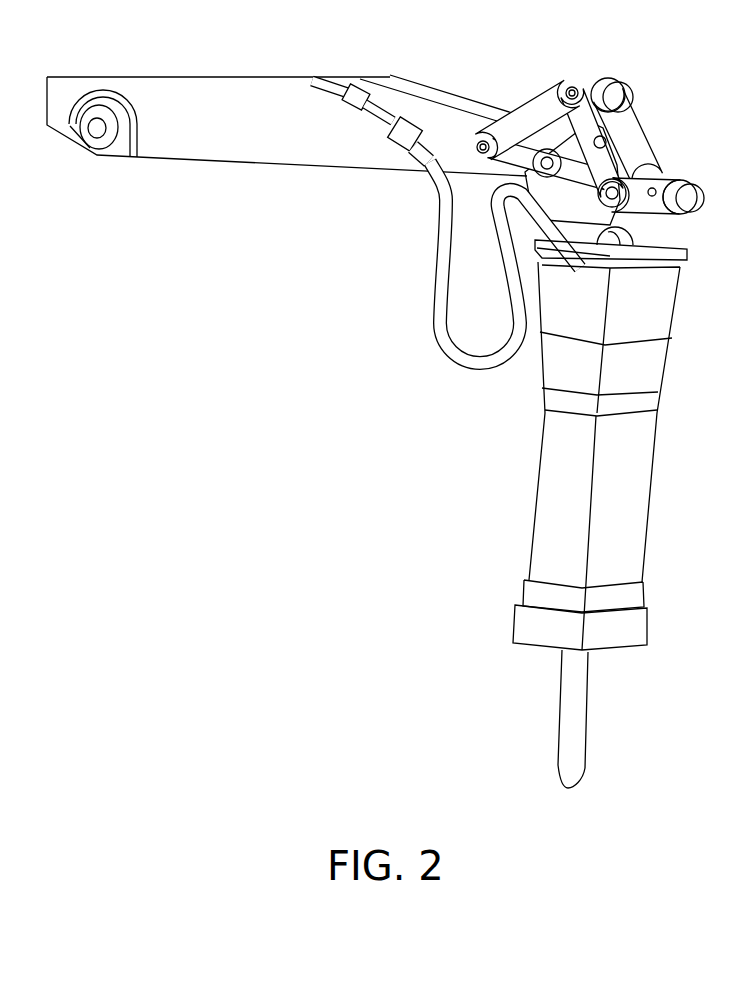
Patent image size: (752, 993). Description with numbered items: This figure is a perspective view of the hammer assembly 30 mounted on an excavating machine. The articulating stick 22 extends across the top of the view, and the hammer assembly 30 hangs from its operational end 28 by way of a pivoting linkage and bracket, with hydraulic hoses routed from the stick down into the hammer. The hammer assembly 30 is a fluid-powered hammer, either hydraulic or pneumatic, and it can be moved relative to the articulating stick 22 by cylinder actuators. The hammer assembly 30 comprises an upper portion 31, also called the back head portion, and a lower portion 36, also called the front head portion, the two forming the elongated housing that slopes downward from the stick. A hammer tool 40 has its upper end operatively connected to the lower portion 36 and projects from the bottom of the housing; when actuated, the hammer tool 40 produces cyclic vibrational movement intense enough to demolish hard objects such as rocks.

The articulating stick 22 is at (262, 133).
The operational end 28 is at (414, 84).
The hammer assembly 30 is at (508, 433).
The upper portion 31 is at (575, 305).
The lower portion 36 is at (557, 533).
The hammer tool 40 is at (568, 700).